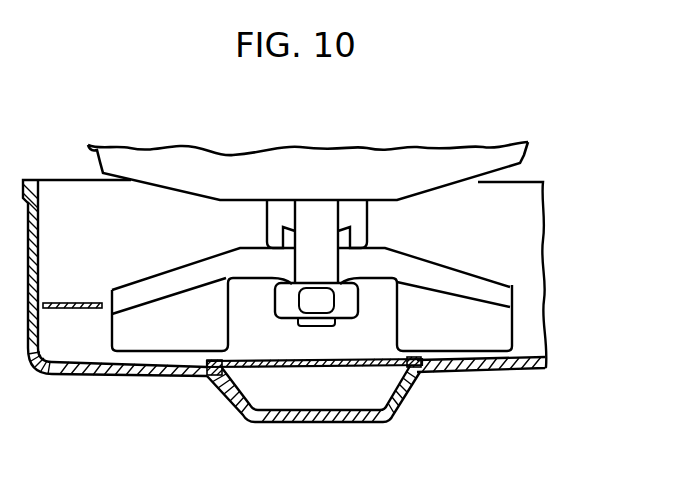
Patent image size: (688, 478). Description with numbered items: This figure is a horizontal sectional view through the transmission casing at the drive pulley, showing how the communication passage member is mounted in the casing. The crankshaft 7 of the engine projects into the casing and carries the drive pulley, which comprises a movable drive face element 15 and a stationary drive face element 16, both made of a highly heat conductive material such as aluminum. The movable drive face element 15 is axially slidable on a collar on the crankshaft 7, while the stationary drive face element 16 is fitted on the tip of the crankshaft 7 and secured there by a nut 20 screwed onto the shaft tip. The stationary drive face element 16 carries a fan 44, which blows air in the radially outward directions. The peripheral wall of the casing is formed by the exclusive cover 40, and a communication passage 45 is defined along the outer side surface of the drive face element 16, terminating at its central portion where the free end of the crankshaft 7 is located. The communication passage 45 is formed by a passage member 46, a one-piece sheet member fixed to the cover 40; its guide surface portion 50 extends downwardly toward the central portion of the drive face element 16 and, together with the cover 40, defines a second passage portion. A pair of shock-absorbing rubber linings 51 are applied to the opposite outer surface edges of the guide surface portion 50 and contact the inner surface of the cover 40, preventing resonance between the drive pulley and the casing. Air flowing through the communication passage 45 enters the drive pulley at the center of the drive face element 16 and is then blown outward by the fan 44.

The crankshaft 7 is at (292, 219).
The movable drive face element 15 is at (415, 184).
The stationary drive face element 16 is at (458, 285).
The nut 20 is at (352, 300).
The exclusive cover 40 is at (498, 373).
The fan 44 is at (500, 326).
The communication passage 45 is at (319, 398).
The passage member 46 is at (72, 312).
The guide surface portion 50 is at (248, 364).
The shock-absorbing rubber linings 51 is at (208, 376).